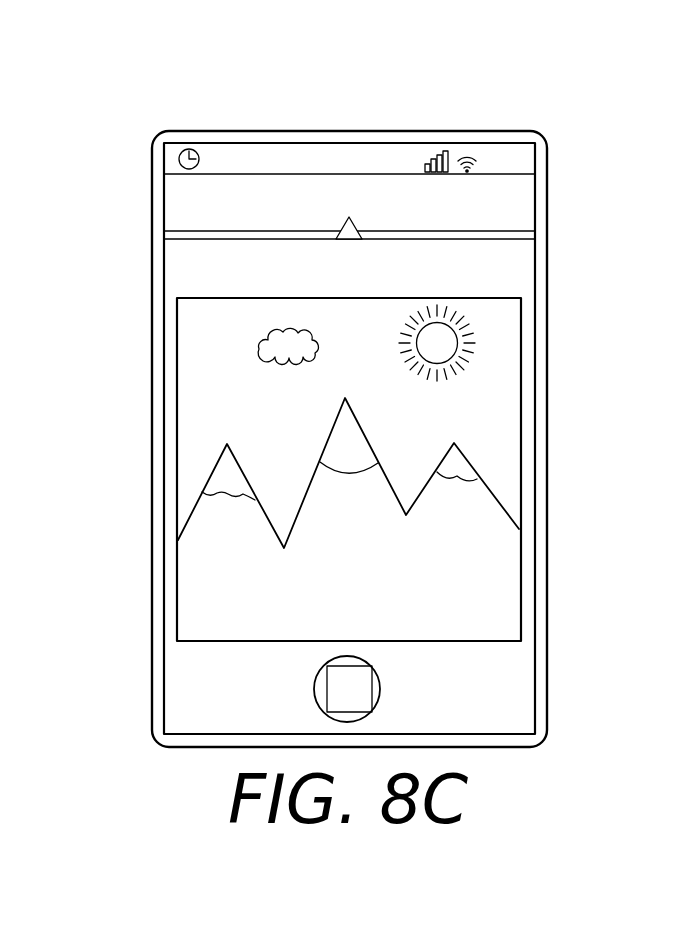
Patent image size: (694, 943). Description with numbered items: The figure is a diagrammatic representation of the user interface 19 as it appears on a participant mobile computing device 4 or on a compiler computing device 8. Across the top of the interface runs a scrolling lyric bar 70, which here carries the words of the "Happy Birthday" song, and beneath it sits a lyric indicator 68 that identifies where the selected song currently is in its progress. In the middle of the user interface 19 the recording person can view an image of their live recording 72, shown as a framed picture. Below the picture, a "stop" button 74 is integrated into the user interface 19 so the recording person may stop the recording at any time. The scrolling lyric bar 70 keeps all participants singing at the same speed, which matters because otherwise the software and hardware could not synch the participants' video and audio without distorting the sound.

The participant mobile computing device 4 is at (392, 404).
The compiler computing device 8 is at (560, 153).
The user interface 19 is at (462, 275).
The lyric indicator 68 is at (349, 243).
The scrolling lyric bar 70 is at (500, 194).
The image of live recording 72 is at (520, 428).
The stop button 74 is at (381, 681).